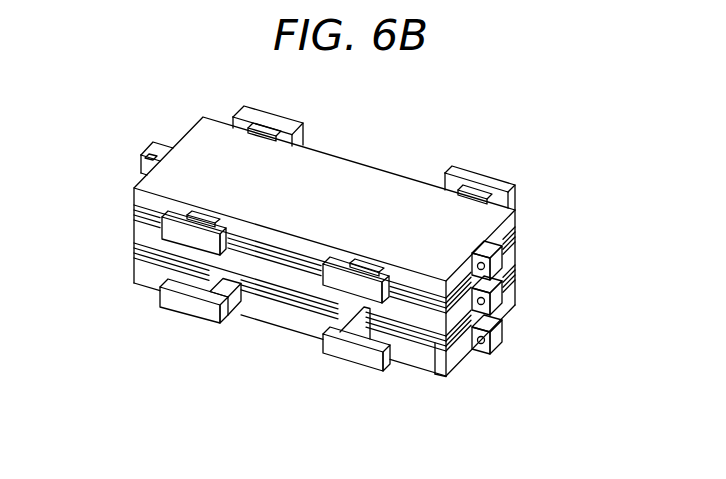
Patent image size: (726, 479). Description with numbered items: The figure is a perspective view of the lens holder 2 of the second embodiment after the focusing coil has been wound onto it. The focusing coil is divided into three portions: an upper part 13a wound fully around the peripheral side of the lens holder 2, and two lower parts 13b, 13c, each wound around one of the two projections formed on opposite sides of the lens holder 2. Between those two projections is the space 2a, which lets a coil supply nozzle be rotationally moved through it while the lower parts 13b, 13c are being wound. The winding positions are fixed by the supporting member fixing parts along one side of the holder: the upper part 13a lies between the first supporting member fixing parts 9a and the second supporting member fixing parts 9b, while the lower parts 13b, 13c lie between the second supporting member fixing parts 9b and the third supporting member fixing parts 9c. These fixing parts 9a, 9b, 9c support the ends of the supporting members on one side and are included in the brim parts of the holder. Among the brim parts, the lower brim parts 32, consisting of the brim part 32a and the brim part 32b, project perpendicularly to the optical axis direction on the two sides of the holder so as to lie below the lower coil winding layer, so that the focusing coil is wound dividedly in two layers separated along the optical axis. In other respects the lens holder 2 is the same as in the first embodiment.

The lens holder 2 is at (192, 137).
The space 2a is at (284, 299).
The upper part of the focusing coil 13a is at (130, 217).
The lower part of the focusing coil 13b is at (130, 255).
The lower part of the focusing coil 13c is at (445, 372).
The first supporting member fixing parts 9a is at (493, 263).
The second supporting member fixing parts 9b is at (493, 299).
The third supporting member fixing parts 9c is at (493, 337).
The brim parts 32 is at (275, 364).
The brim part 32a is at (150, 278).
The brim part 32b is at (420, 357).